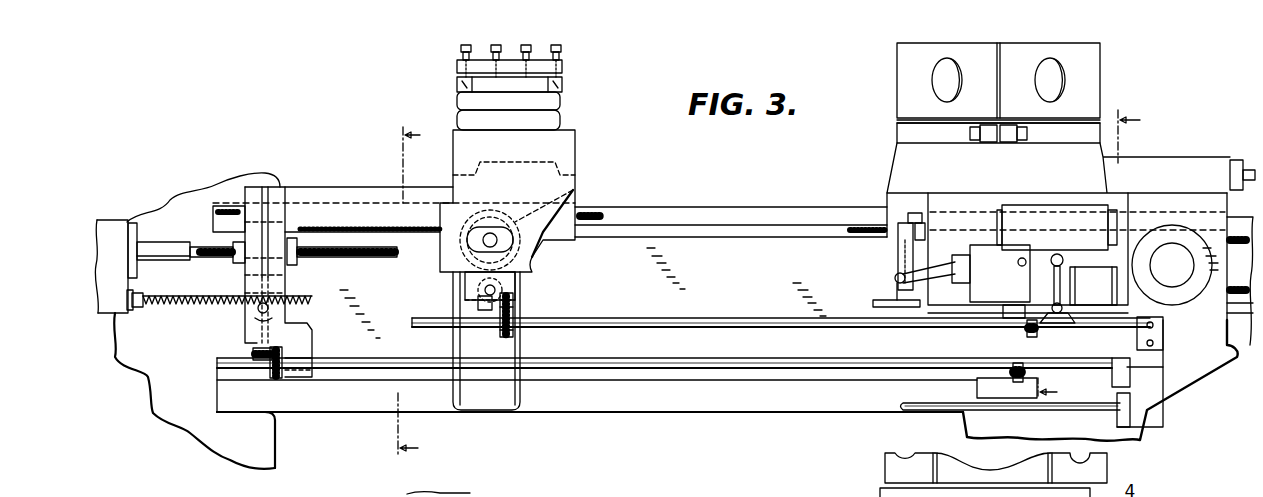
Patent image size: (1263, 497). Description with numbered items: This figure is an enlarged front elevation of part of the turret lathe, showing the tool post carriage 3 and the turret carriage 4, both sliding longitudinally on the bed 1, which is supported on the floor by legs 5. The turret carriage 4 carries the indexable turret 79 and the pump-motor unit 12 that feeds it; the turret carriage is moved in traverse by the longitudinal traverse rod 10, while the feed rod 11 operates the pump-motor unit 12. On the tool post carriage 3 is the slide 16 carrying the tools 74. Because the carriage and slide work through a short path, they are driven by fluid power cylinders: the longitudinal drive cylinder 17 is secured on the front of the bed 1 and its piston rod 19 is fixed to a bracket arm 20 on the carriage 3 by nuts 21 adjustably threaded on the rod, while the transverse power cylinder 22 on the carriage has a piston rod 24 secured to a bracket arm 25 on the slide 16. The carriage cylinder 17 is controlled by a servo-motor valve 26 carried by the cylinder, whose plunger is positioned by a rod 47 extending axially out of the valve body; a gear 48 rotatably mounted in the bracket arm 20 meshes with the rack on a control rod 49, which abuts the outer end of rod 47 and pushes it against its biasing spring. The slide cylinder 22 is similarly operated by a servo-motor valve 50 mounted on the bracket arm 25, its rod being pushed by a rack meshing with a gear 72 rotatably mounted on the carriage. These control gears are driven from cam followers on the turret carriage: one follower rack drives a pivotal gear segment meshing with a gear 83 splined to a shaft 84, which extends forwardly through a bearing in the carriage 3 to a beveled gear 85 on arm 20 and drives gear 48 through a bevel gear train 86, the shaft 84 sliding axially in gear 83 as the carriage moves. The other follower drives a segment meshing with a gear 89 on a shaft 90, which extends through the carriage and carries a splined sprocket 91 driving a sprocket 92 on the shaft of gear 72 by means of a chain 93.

The bed 1 is at (717, 207).
The tool post carriage 3 is at (347, 187).
The turret carriage 4 is at (892, 163).
The legs 5 is at (280, 440).
The longitudinal traverse rod 10 is at (905, 405).
The feed rod 11 is at (885, 297).
The pump-motor unit 12 is at (957, 200).
The slide 16 is at (576, 142).
The longitudinal drive cylinder 17 is at (107, 227).
The piston rod 19 is at (180, 260).
The bracket arm 20 is at (286, 278).
The nuts 21 is at (237, 263).
The transverse power cylinder 22 is at (574, 190).
The piston rod 24 is at (483, 240).
The bracket arm 25 is at (547, 228).
The servo-motor valve 26 is at (117, 308).
The rod 47 is at (150, 302).
The gear 48 is at (285, 310).
The control rod 49 is at (227, 302).
The servo-motor valve 50 is at (477, 288).
The gear 72 is at (483, 305).
The tools 74 is at (457, 80).
The turret 79 is at (1102, 60).
The gear 83 is at (1025, 363).
The shaft 84 is at (867, 366).
The beveled gear 85 is at (272, 372).
The bevel gear train 86 is at (255, 357).
The gear 89 is at (1027, 333).
The shaft 90 is at (767, 320).
The sprocket 91 is at (513, 338).
The sprocket 92 is at (513, 292).
The chain 93 is at (513, 307).